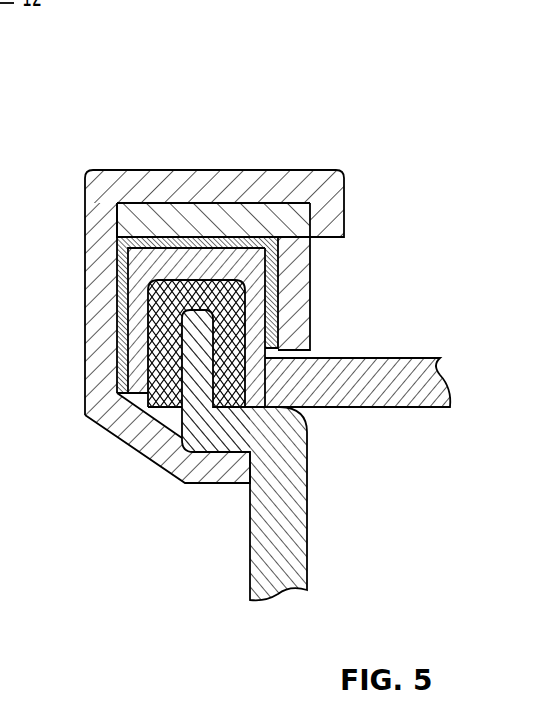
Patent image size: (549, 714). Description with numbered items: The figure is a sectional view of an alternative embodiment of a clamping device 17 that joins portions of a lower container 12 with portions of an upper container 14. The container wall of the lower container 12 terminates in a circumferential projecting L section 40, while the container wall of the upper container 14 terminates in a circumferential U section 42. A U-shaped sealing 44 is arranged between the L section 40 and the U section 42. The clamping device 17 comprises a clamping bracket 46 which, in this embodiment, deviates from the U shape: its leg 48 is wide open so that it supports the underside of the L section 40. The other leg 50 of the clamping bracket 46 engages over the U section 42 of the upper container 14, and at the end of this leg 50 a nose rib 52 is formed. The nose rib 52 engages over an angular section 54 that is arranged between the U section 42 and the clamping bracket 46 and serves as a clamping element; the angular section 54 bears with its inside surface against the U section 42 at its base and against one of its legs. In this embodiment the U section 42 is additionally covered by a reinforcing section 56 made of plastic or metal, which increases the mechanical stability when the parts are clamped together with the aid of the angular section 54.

The lower container 12 is at (288, 543).
The upper container 14 is at (400, 400).
The clamping device 17 is at (236, 113).
The L section 40 is at (228, 432).
The U section 42 is at (133, 312).
The U-shaped sealing 44 is at (170, 368).
The clamping bracket 46 is at (104, 220).
The first leg 48 is at (140, 438).
The second leg 50 is at (283, 183).
The nose rib 52 is at (332, 205).
The angular section 54 is at (292, 258).
The reinforcing section 56 is at (268, 300).